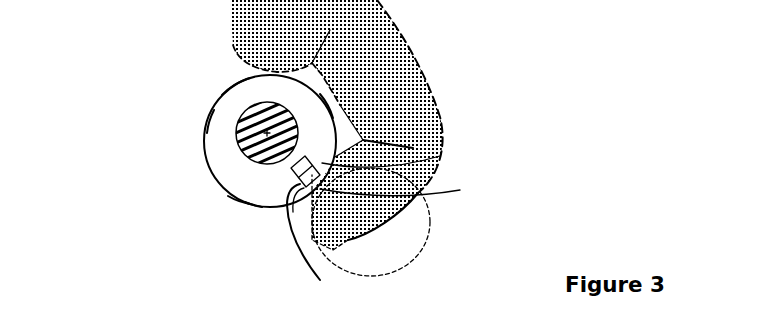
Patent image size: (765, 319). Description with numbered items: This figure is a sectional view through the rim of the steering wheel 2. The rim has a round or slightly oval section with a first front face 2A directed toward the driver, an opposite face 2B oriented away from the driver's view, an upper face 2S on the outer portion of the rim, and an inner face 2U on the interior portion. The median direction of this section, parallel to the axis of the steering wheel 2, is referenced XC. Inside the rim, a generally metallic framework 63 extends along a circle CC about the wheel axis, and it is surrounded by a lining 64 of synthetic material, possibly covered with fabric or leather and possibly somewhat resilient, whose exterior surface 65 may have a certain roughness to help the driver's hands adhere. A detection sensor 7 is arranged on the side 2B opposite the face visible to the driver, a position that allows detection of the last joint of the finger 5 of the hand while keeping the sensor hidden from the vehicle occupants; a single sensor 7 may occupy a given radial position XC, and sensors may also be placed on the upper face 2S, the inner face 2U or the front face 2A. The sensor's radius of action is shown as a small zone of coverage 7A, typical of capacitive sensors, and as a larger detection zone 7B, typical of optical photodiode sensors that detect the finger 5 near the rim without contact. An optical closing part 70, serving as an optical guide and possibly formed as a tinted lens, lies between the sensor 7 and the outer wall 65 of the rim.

The steering wheel 2 is at (203, 102).
The first front face 2A is at (229, 97).
The upper face 2S is at (320, 93).
The opposite face 2B is at (413, 148).
The inner face 2U is at (228, 199).
The finger 5 is at (397, 27).
The detection sensor 7 is at (294, 174).
The zone of coverage 7A is at (407, 191).
The detection zone 7B is at (430, 223).
The optical closing part 70 is at (316, 249).
The framework 63 is at (252, 142).
The lining 64 is at (253, 192).
The exterior surface 65 is at (207, 133).
The circle CC is at (270, 158).
The median direction XC is at (125, 5).